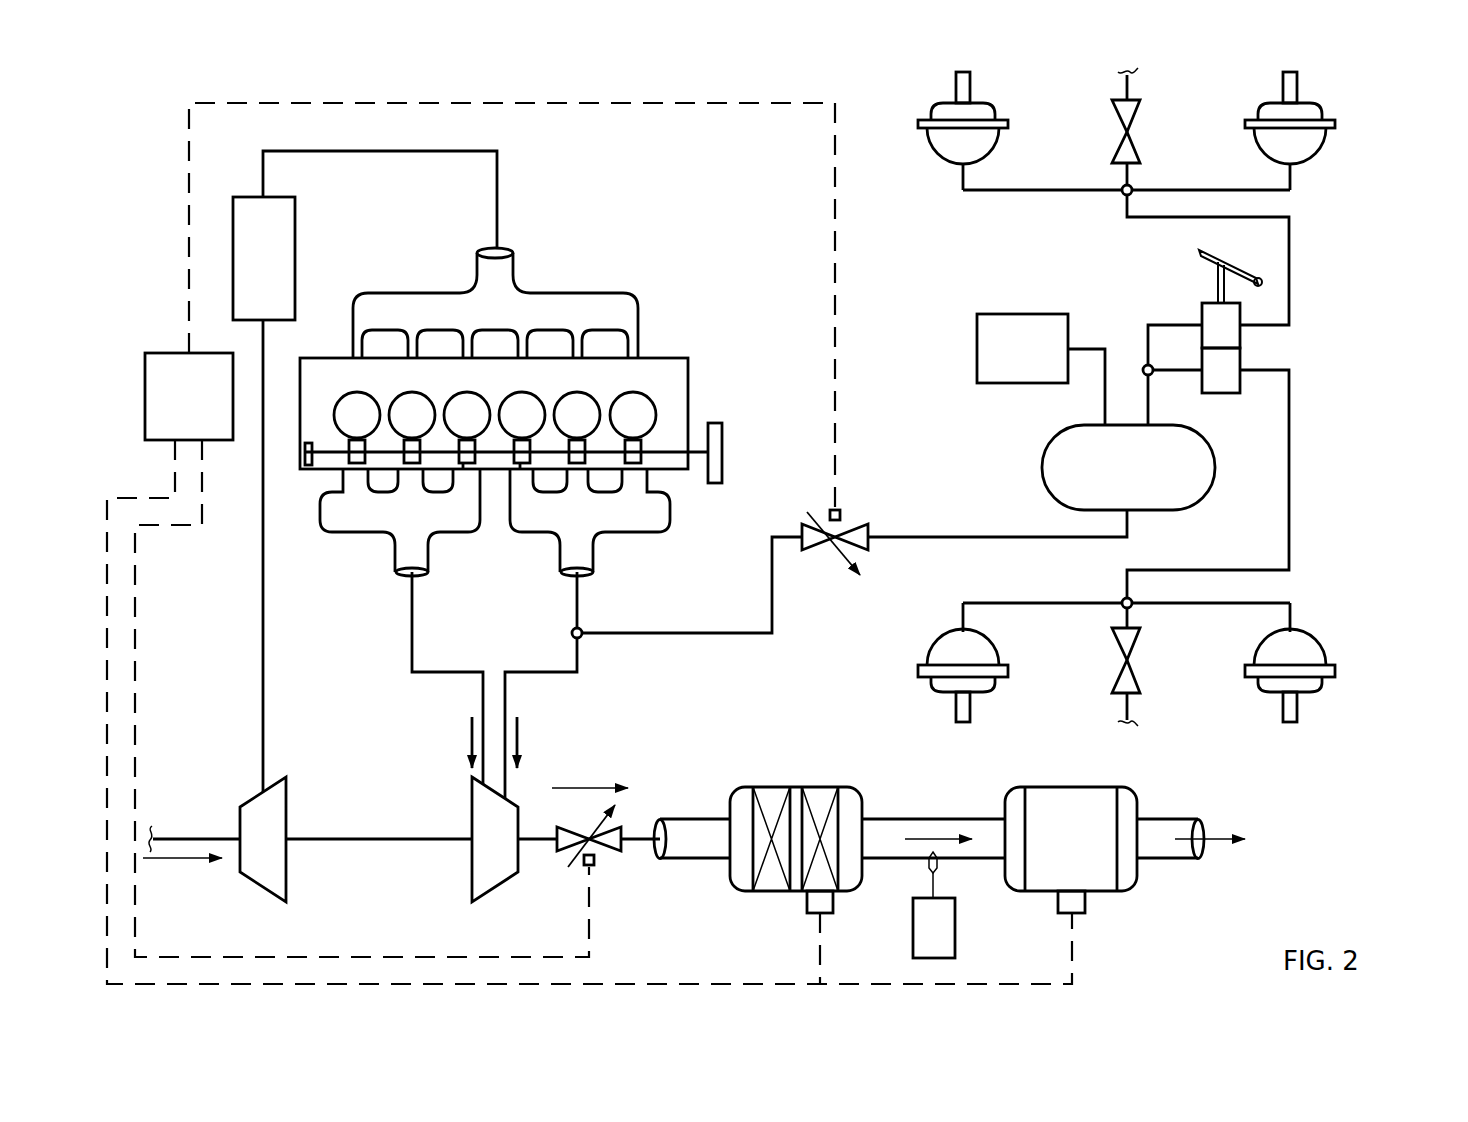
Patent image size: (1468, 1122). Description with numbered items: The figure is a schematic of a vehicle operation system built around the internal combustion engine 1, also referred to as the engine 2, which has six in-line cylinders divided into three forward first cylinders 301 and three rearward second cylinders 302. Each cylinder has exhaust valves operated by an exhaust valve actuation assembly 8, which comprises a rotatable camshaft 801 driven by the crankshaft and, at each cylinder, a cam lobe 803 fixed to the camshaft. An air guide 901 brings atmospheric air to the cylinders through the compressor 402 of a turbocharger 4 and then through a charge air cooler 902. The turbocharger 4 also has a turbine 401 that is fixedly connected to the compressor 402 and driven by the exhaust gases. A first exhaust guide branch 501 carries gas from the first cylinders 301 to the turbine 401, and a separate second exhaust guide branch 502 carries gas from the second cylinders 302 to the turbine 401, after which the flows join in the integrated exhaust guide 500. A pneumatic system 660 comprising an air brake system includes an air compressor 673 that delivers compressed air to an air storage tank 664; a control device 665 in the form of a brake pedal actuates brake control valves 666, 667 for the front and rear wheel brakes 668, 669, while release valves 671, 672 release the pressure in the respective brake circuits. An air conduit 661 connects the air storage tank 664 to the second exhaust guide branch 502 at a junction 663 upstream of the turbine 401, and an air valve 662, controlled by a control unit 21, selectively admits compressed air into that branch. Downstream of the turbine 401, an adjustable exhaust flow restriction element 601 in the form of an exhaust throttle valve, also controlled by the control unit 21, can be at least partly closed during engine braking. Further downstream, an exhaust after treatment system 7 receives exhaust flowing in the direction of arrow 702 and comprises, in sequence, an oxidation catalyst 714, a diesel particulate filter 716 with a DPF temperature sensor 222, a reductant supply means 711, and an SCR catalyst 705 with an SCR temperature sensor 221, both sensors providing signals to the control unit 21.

The engine 1 is at (634, 248).
The engine 2 is at (668, 355).
The first cylinders 301 is at (460, 392).
The second cylinders 302 is at (526, 392).
The exhaust valve actuation assembly 8 is at (698, 440).
The camshaft 801 is at (700, 458).
The cam lobe 803 is at (523, 468).
The first exhaust guide branch 501 is at (345, 535).
The second exhaust guide branch 502 is at (635, 535).
The control unit 21 is at (204, 417).
The air guide 901 is at (383, 151).
The charge air cooler 902 is at (283, 273).
The turbocharger 4 is at (345, 893).
The turbine 401 is at (500, 885).
The compressor 402 is at (262, 885).
The exhaust flow restriction element 601 is at (575, 826).
The exhaust guide 500 is at (642, 822).
The junction 663 is at (580, 638).
The air conduit 661 is at (680, 633).
The air valve 662 is at (806, 530).
The pneumatic system 660 is at (1340, 312).
The compressed air storage tank 664 is at (1042, 462).
The control device 665 is at (1198, 254).
The brake control valve 666 is at (1200, 310).
The brake control valve 667 is at (1242, 385).
The front wheel brakes 668 is at (930, 152).
The rear wheel brakes 669 is at (932, 645).
The release valve 671 is at (1135, 120).
The release valve 672 is at (1138, 680).
The air compressor 673 is at (977, 348).
The oxidation catalyst 714 is at (772, 893).
The diesel particulate filter 716 is at (816, 785).
The DPF temperature sensor 222 is at (835, 903).
The arrow 702 is at (928, 836).
The reductant supply means 711 is at (955, 930).
The SCR catalyst 705 is at (1075, 785).
The SCR temperature sensor 221 is at (1087, 903).
The exhaust after treatment system 7 is at (1180, 903).